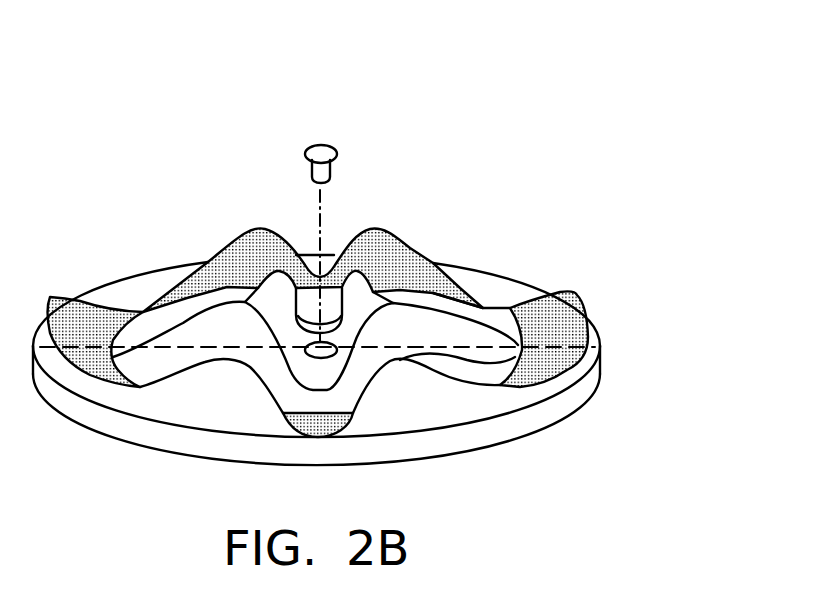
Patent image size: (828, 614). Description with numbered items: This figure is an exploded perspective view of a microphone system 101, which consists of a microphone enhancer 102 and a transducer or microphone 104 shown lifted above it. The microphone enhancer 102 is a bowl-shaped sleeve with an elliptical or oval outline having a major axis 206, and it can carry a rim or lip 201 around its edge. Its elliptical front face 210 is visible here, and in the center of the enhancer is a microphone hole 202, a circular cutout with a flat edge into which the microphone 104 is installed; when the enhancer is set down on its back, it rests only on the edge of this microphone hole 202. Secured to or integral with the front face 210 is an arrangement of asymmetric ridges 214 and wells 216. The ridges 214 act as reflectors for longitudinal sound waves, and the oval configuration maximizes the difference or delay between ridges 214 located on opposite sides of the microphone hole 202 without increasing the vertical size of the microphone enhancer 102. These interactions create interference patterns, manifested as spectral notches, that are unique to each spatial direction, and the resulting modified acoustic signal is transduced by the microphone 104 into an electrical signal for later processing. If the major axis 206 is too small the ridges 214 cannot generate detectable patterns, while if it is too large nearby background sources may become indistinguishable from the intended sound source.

The microphone system 101 is at (528, 108).
The microphone enhancer 102 is at (617, 352).
The microphone 104 is at (335, 150).
The rim or lip 201 is at (513, 421).
The microphone hole 202 is at (372, 290).
The major axis 206 is at (146, 347).
The front face 210 is at (165, 284).
The ridges 214 is at (575, 296).
The wells 216 is at (487, 310).